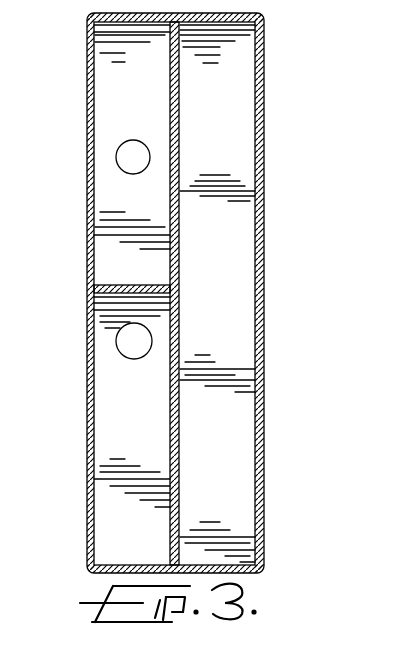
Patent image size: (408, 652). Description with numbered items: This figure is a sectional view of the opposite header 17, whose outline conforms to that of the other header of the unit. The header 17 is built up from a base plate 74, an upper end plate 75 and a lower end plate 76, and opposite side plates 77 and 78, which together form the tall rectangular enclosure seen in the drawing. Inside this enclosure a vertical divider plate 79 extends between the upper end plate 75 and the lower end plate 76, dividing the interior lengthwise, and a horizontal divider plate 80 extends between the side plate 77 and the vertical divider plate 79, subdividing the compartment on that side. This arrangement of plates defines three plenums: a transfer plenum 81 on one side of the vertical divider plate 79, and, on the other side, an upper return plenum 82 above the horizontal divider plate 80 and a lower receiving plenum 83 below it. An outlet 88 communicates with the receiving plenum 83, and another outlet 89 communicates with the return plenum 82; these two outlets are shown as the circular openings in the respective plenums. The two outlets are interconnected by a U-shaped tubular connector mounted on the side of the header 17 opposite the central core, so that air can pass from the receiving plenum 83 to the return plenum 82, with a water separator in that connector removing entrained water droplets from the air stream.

The header 17 is at (87, 103).
The base plate 74 is at (230, 147).
The upper end plate 75 is at (230, 22).
The lower end plate 76 is at (112, 563).
The side plate 77 is at (88, 262).
The side plate 78 is at (265, 213).
The vertical divider plate 79 is at (179, 446).
The horizontal divider plate 80 is at (148, 284).
The transfer plenum 81 is at (226, 346).
The upper return plenum 82 is at (108, 224).
The lower receiving plenum 83 is at (108, 420).
The outlet 88 is at (120, 355).
The outlet 89 is at (118, 168).